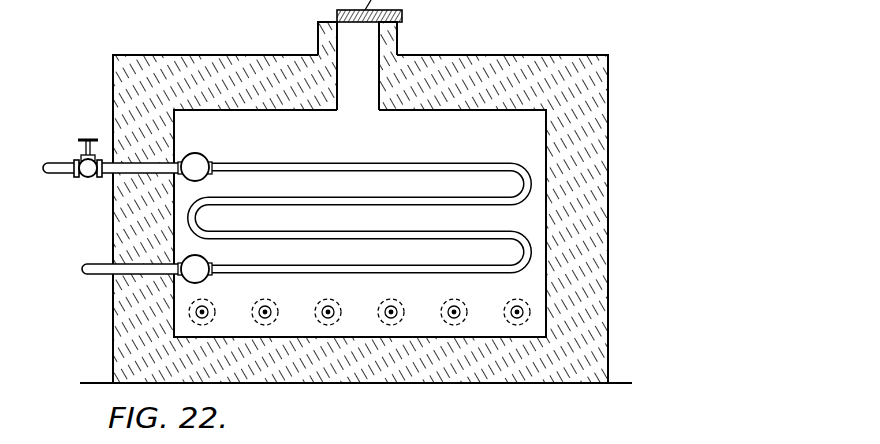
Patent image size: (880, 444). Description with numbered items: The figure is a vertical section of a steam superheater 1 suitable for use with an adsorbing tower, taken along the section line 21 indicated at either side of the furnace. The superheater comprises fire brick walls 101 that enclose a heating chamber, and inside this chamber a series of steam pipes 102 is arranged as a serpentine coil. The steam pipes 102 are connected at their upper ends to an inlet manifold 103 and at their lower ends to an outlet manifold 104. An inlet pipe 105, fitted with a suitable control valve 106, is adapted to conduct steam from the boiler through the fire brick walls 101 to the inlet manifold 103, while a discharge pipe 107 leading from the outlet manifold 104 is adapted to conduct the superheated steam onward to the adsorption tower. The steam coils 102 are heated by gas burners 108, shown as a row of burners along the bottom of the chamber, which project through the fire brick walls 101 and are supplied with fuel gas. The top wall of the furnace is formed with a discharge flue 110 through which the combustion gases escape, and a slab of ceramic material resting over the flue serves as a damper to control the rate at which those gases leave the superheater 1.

The furnace 1 is at (360, 206).
The section line of FIG. 21 is at (150, 108).
The fire brick walls 101 is at (125, 228).
The steam pipes 102 is at (371, 197).
The inlet manifold 103 is at (199, 153).
The outlet manifold 104 is at (205, 281).
The inlet pipe 105 is at (60, 176).
The control valve 106 is at (88, 180).
The discharge pipe 107 is at (95, 278).
The gas burners 108 is at (392, 311).
The discharge flue 110 is at (318, 36).